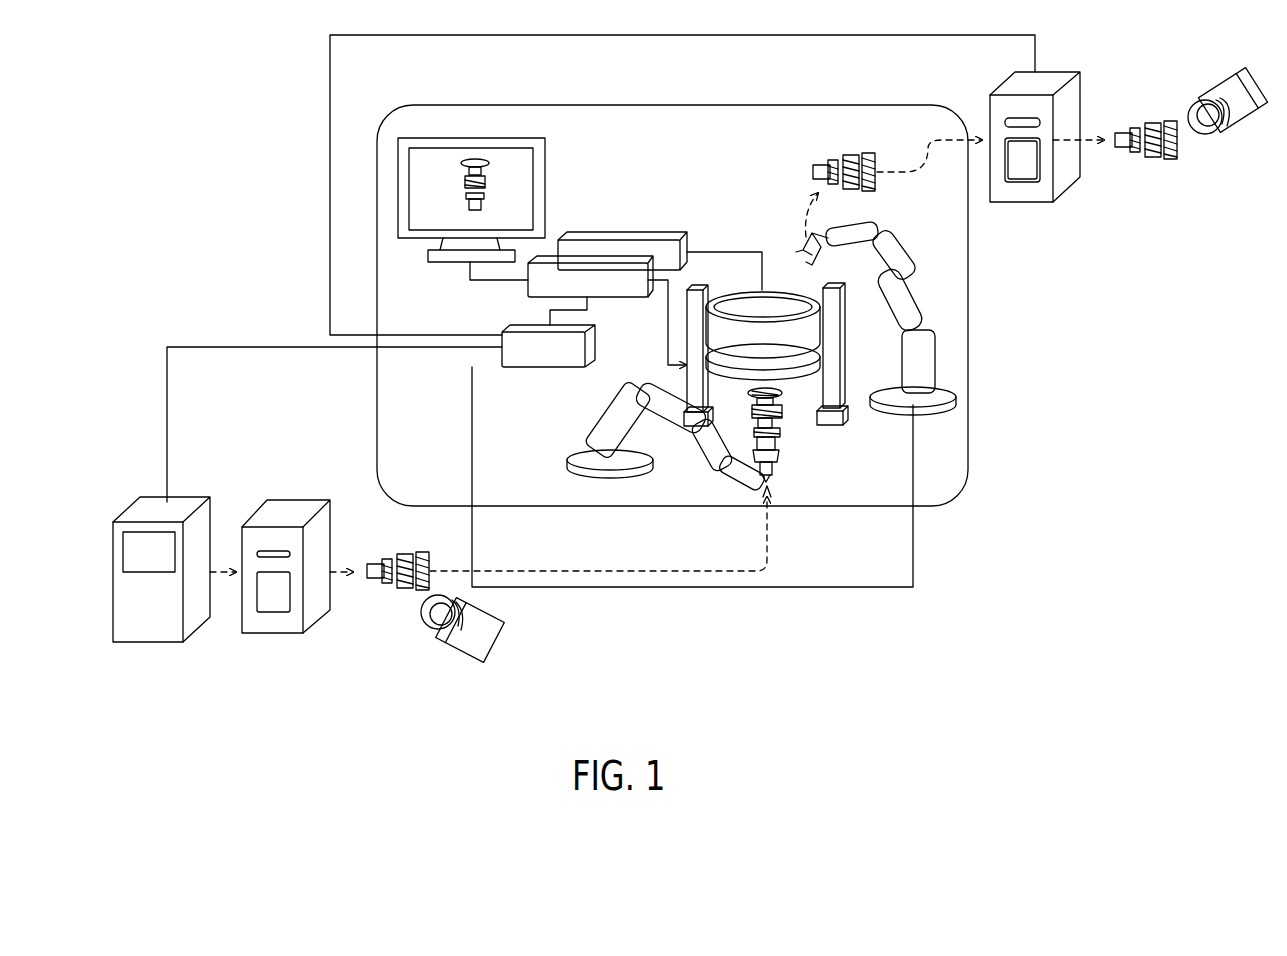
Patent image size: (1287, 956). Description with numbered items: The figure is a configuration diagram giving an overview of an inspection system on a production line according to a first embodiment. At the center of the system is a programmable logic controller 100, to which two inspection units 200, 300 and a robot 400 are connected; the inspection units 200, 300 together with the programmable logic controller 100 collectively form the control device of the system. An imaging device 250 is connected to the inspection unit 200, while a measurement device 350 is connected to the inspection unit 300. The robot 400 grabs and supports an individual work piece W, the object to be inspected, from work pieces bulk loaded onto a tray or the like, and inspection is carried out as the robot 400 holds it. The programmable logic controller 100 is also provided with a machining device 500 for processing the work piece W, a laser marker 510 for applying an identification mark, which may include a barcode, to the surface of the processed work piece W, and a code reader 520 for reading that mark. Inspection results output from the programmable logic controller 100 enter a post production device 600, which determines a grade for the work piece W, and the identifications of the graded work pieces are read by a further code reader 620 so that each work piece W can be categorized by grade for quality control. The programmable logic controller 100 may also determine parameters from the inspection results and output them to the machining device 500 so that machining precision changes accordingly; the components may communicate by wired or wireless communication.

The programmable logic controller 100 is at (517, 325).
The inspection unit 200 is at (650, 232).
The imaging device 250 is at (777, 287).
The inspection unit 300 is at (636, 298).
The measurement device 350 is at (806, 375).
The robot 400 is at (603, 413).
The machining device 500 is at (186, 497).
The laser marker 510 is at (300, 500).
The code reader 520 is at (495, 640).
The post production device 600 is at (1058, 72).
The code reader 620 is at (1217, 88).
The work piece W is at (853, 157).